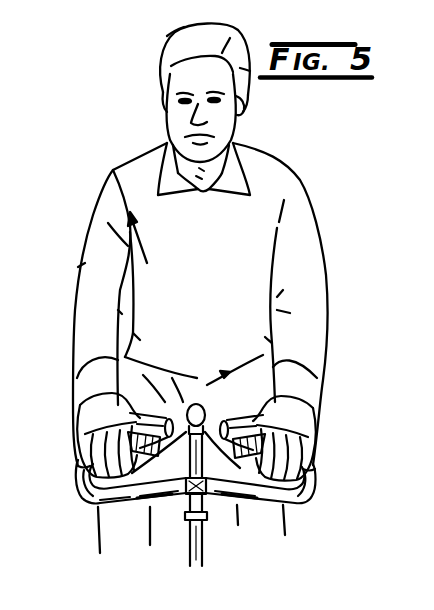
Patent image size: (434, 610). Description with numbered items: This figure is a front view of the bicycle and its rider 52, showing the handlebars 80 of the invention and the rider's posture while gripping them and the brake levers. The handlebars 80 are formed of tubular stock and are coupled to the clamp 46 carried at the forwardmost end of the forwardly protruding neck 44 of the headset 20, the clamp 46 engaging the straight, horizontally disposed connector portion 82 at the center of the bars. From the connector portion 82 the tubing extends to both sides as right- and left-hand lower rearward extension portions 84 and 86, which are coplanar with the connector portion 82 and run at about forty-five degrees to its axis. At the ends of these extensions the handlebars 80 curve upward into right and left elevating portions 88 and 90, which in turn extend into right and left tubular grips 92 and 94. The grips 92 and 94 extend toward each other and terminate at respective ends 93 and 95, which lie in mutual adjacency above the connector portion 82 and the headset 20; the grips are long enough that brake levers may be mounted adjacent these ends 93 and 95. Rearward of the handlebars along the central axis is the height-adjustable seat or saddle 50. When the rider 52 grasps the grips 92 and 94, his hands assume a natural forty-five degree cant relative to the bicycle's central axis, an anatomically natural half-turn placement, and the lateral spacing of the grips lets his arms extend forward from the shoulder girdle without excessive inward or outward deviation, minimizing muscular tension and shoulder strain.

The headset 20 is at (205, 548).
The neck 44 is at (212, 482).
The clamp 46 is at (187, 510).
The seat or saddle 50 is at (210, 409).
The cyclist or rider 52 is at (88, 126).
The handlebars 80 is at (323, 470).
The connector portion 82 is at (160, 513).
The right-hand side lower rearward extension portion 84 is at (108, 509).
The left-hand side lower rearward extension portion 86 is at (273, 512).
The right elevating portion 88 is at (87, 487).
The left elevating portion 90 is at (307, 494).
The right tubular grip 92 is at (84, 405).
The right grip end 93 is at (90, 470).
The left tubular grip 94 is at (308, 405).
The left grip end 95 is at (308, 473).